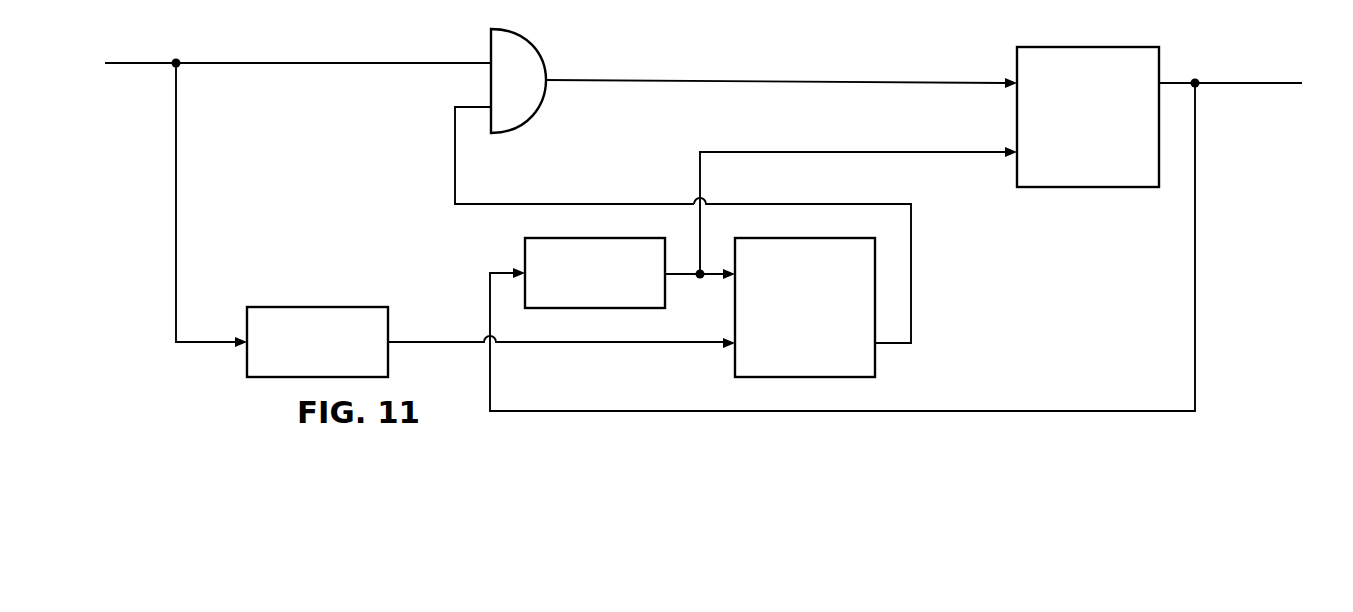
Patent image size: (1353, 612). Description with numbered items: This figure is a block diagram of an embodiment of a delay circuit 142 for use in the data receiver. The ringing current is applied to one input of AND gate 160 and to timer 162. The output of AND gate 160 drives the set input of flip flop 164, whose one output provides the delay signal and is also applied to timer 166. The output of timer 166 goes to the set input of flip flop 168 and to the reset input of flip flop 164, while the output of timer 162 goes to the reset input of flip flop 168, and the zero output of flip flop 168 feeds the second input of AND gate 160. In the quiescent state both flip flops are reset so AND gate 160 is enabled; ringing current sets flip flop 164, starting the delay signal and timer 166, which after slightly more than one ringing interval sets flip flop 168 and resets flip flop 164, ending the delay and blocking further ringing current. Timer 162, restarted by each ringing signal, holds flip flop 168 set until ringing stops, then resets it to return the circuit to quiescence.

The delay circuit 142 is at (152, 258).
The AND gate 160 is at (520, 100).
The timer 162 is at (273, 360).
The flip flop 164 is at (1077, 172).
The timer 166 is at (546, 255).
The flip flop 168 is at (855, 365).